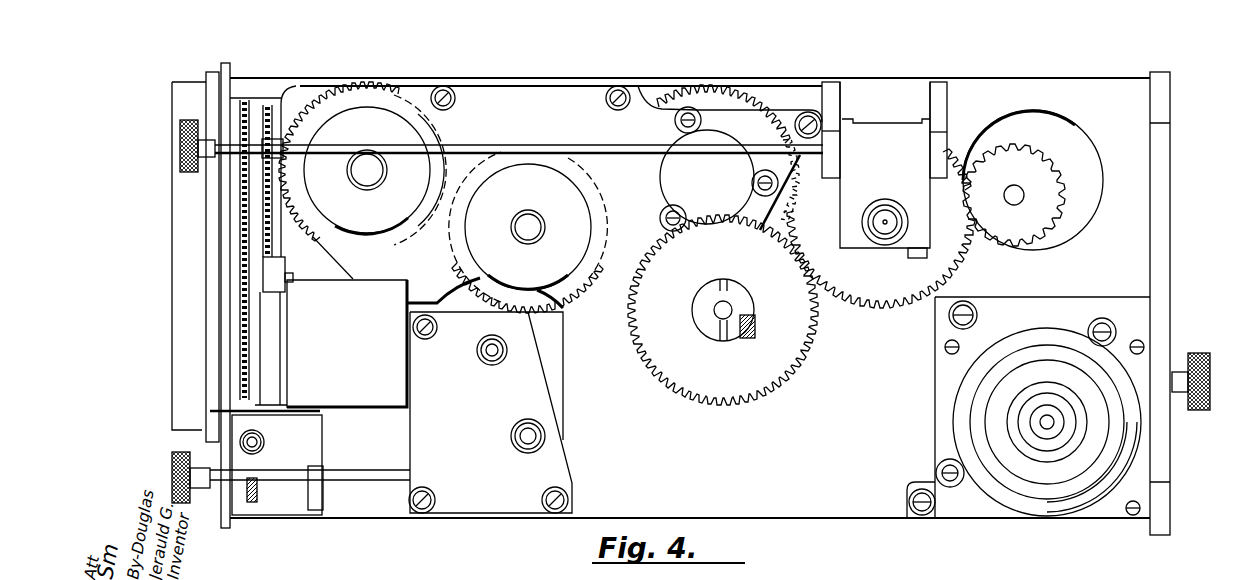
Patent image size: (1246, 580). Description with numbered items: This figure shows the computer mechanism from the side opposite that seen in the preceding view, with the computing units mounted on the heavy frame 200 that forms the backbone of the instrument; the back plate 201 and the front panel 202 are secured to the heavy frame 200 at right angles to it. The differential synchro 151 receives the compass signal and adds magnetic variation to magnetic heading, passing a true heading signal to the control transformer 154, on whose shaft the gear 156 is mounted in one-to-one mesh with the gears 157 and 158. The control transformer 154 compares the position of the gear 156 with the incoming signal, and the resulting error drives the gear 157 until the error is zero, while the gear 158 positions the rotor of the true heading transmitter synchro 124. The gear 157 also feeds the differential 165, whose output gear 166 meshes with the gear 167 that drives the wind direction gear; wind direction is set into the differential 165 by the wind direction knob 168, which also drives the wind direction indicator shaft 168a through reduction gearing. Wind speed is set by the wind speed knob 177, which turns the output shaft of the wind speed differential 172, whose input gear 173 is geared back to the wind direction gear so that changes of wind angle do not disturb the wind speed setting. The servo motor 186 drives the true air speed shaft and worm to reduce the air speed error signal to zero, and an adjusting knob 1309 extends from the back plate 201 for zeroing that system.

The heavy frame 200 is at (803, 79).
The front panel 202 is at (247, 62).
The back plate 201 is at (1165, 500).
The wind speed knob 177 is at (182, 140).
The true heading transmitter synchro 124 is at (408, 132).
The gear 158 is at (356, 82).
The control transformer 154 is at (533, 175).
The gear 156 is at (592, 292).
The gear 157 is at (706, 62).
The differential 165 is at (888, 146).
The output gear 166 is at (960, 266).
The gear 167 is at (782, 373).
The wind speed differential 172 is at (525, 402).
The input gear 173 is at (528, 437).
The differential synchro 151 is at (362, 397).
The wind direction knob 168 is at (167, 455).
The wind direction indicator shaft 168a is at (287, 462).
The servo motor 186 is at (1018, 497).
The knurled knob 1309 is at (1205, 342).